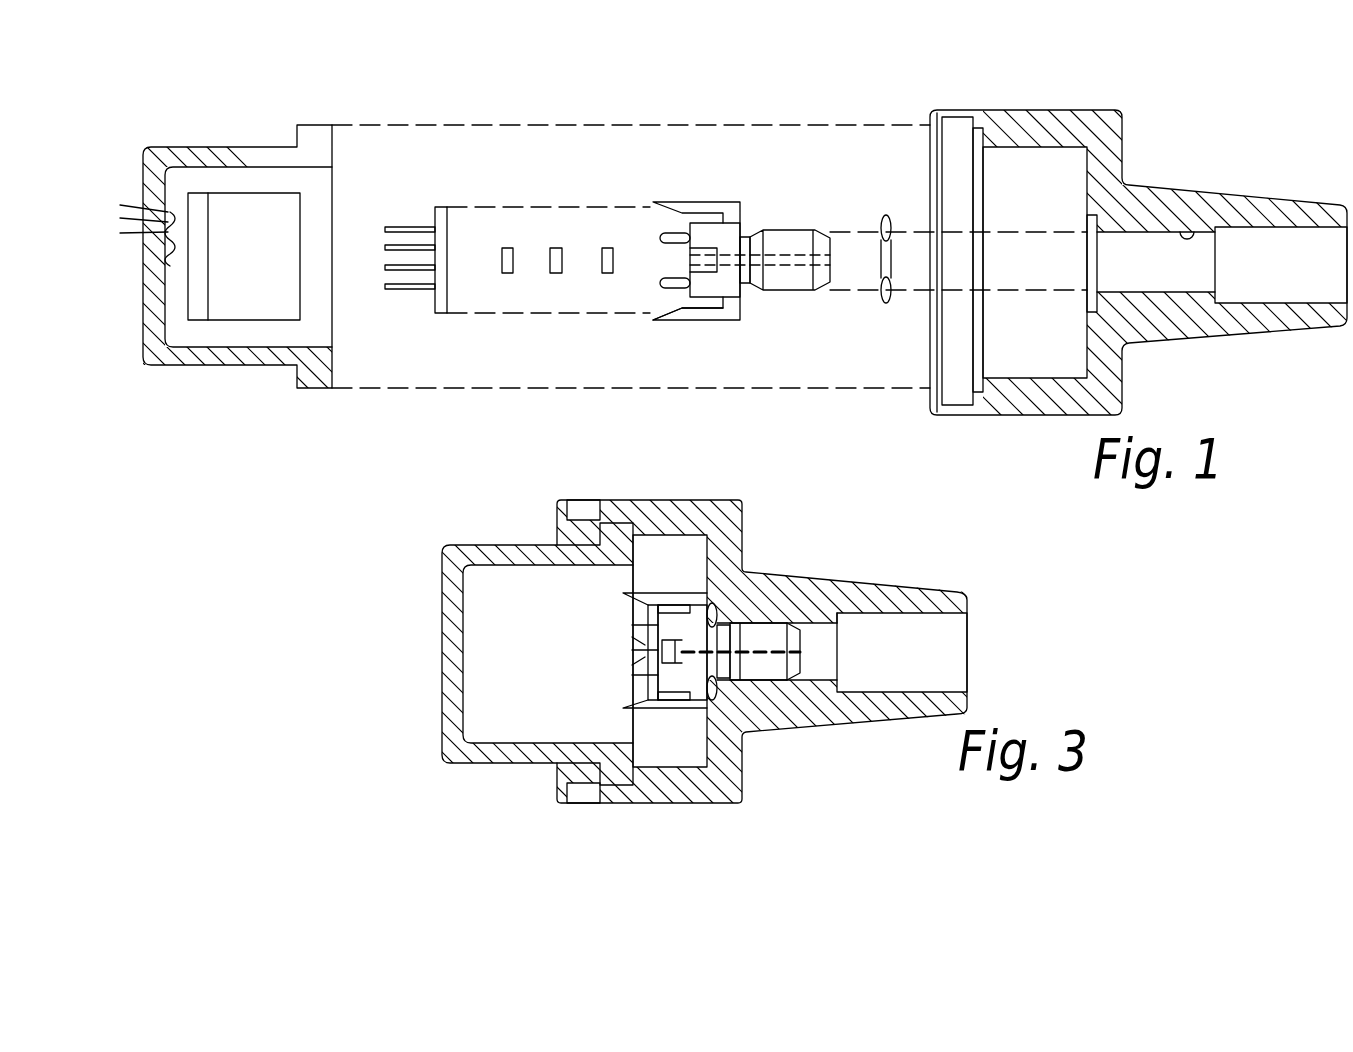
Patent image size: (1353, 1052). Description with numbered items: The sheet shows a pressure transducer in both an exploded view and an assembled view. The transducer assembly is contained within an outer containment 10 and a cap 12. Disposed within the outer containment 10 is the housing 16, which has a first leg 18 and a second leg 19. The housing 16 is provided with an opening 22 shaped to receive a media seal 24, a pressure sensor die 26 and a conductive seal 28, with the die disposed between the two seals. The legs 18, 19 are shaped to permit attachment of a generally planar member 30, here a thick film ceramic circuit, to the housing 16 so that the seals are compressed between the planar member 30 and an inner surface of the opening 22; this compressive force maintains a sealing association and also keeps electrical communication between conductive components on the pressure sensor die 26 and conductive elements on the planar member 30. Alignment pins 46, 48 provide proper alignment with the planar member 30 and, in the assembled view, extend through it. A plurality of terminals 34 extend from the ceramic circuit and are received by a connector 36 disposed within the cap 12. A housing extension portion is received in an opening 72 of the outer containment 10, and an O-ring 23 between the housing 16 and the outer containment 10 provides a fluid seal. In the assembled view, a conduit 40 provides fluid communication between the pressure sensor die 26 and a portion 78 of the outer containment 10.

In FIG. 1, the outer containment 10 is at (1138, 256).
In FIG. 3, the outer containment 10 is at (780, 651).
In FIG. 1, the cap 12 is at (198, 367).
In FIG. 3, the cap 12 is at (457, 763).
In FIG. 1, the housing 16 is at (735, 237).
In FIG. 3, the housing 16 is at (697, 623).
In FIG. 1, the leg 18 is at (680, 202).
In FIG. 3, the leg 18 is at (676, 595).
In FIG. 1, the leg 19 is at (683, 322).
In FIG. 3, the leg 19 is at (740, 777).
In FIG. 1, the opening 22 is at (690, 260).
In FIG. 3, the opening 22 is at (682, 652).
In FIG. 1, the O-ring 23 is at (883, 303).
In FIG. 3, the O-ring 23 is at (717, 610).
In FIG. 1, the media seal 24 is at (616, 252).
In FIG. 3, the media seal 24 is at (648, 652).
In FIG. 1, the pressure sensor die 26 is at (548, 252).
In FIG. 3, the pressure sensor die 26 is at (648, 657).
In FIG. 1, the conductive seal 28 is at (498, 250).
In FIG. 3, the conductive seal 28 is at (648, 628).
In FIG. 1, the generally planar member 30 is at (447, 205).
In FIG. 3, the generally planar member 30 is at (650, 607).
In FIG. 1, the terminals 34 is at (407, 292).
In FIG. 1, the connector 36 is at (236, 212).
In FIG. 3, the conduit 40 is at (787, 657).
In FIG. 3, the alignment pin 46 is at (636, 645).
In FIG. 3, the alignment pin 48 is at (637, 657).
In FIG. 1, the opening 72 is at (1190, 235).
In FIG. 3, the opening 72 is at (837, 627).
In FIG. 1, the portion 78 is at (1281, 265).
In FIG. 3, the portion 78 is at (963, 653).